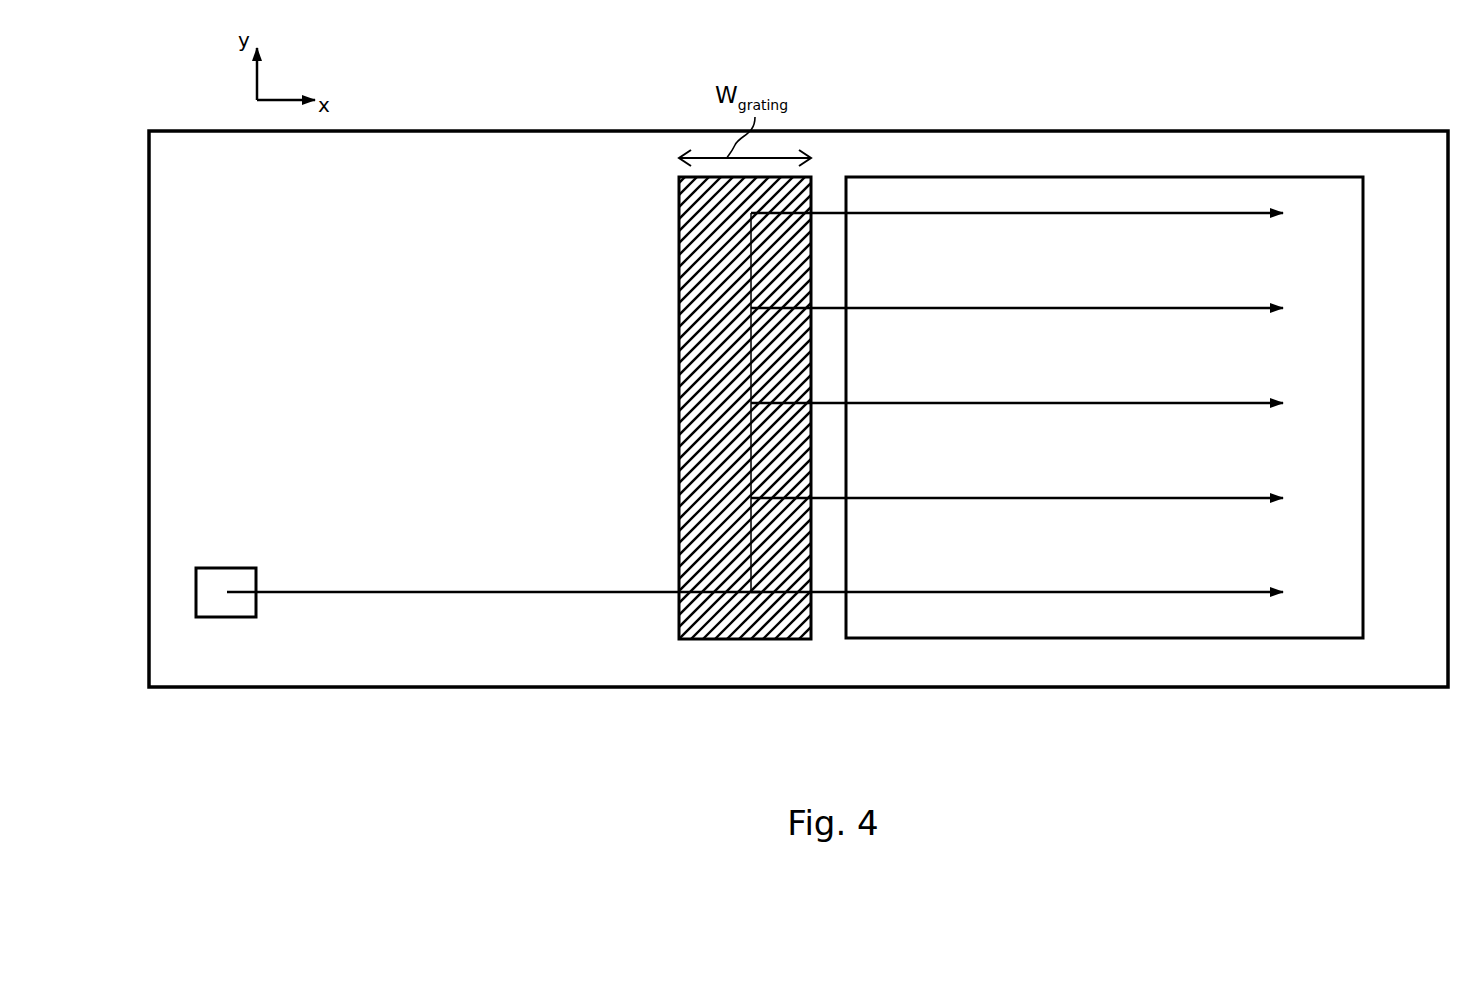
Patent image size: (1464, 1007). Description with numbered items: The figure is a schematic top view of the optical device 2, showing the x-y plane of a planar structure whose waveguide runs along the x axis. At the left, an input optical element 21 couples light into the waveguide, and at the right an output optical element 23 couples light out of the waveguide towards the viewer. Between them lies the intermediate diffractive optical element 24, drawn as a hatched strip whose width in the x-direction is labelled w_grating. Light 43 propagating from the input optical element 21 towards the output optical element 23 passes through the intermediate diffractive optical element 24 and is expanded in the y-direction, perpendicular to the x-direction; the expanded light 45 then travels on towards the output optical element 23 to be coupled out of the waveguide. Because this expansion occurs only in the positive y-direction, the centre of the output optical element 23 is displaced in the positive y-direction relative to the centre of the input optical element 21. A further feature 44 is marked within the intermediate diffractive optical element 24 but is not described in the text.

The optical device 2 is at (145, 590).
The input optical element 21 is at (230, 626).
The output optical element 23 is at (1034, 649).
The intermediate diffractive optical element 24 is at (746, 653).
The light 43 is at (373, 590).
The grating splitting line 44 is at (750, 358).
The expanded light 45 is at (913, 216).